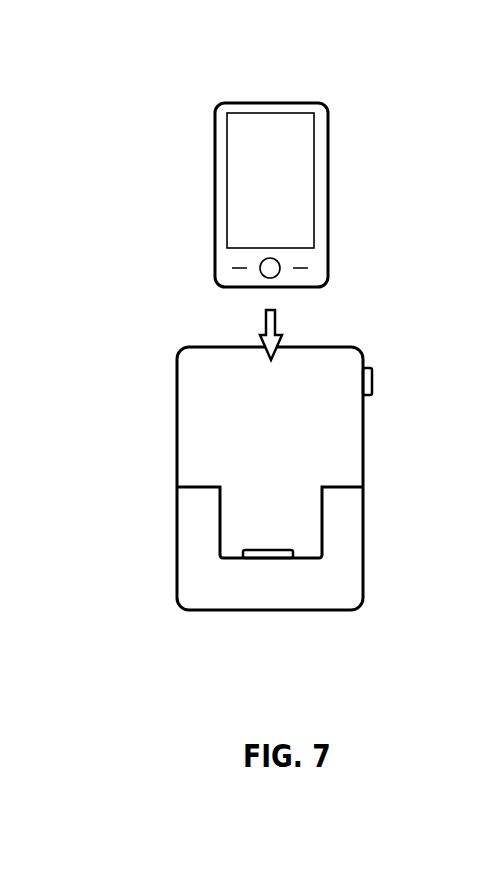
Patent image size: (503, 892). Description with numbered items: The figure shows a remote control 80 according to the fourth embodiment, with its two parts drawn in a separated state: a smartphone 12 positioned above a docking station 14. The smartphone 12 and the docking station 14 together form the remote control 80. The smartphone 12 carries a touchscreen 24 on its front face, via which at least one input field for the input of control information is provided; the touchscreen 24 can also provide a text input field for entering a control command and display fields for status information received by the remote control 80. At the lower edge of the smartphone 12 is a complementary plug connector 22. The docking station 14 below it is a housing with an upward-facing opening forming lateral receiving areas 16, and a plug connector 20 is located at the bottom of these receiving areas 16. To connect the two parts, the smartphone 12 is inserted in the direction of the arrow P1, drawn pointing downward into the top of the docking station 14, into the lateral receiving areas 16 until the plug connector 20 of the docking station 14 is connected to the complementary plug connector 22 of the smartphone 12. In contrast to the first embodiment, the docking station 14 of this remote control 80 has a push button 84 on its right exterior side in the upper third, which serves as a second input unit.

The remote control 80 is at (103, 236).
The smartphone 12 is at (322, 172).
The touchscreen 24 is at (282, 207).
The complementary plug connector 22 is at (247, 287).
The docking station 14 is at (177, 442).
The lateral receiving areas 16 is at (325, 501).
The plug connector 20 is at (280, 550).
The push button 84 is at (372, 381).
The arrow P1 is at (273, 318).